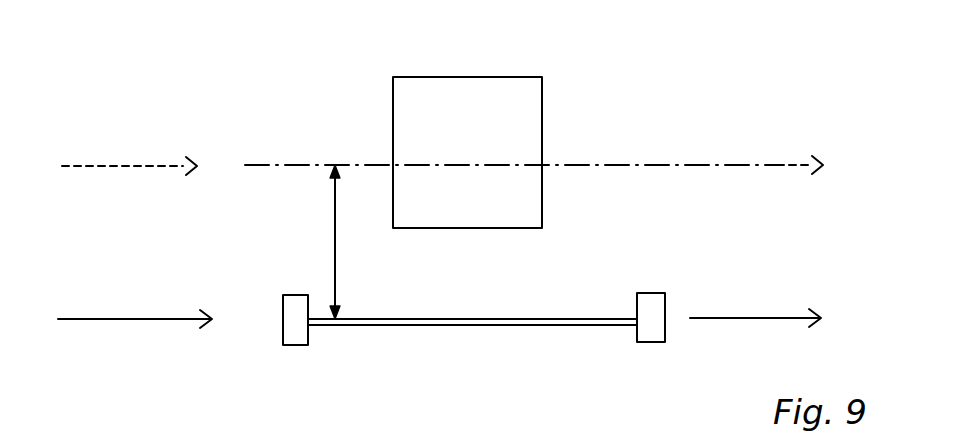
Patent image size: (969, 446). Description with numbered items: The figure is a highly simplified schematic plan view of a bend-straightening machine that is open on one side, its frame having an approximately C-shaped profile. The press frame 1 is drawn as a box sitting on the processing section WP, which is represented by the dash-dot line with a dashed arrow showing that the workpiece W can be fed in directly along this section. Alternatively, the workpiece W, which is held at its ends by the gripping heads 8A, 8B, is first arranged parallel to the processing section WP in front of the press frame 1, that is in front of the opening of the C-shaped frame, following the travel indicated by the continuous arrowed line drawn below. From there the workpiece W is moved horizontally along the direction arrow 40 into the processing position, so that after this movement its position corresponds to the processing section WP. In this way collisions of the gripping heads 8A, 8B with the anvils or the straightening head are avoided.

The press frame 1 is at (513, 89).
The processing section WP is at (675, 162).
The workpiece W is at (538, 322).
The gripping head 8A is at (298, 338).
The gripping head 8B is at (658, 333).
The direction arrow 40 is at (335, 245).